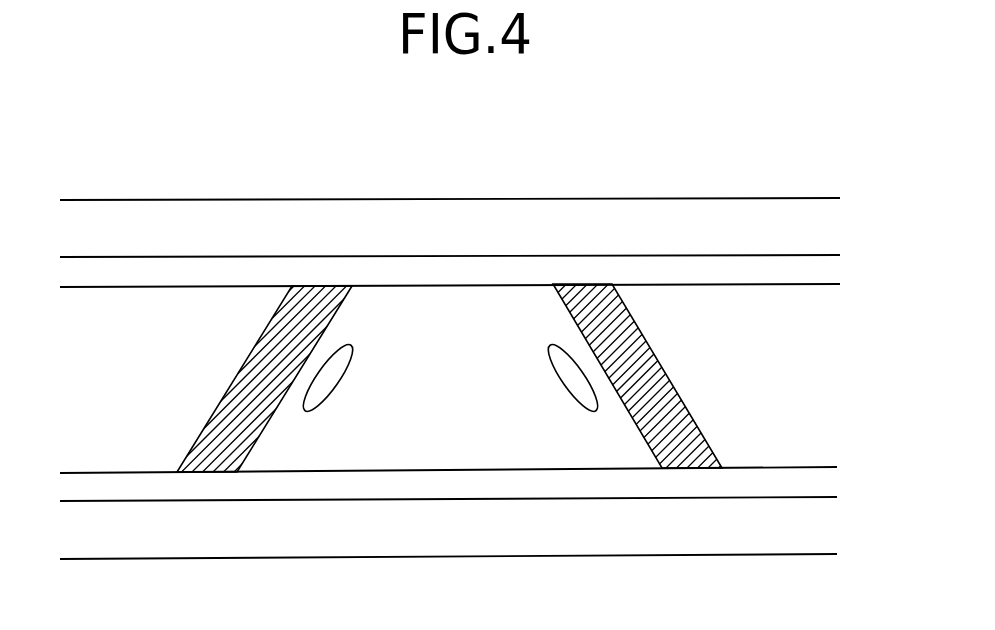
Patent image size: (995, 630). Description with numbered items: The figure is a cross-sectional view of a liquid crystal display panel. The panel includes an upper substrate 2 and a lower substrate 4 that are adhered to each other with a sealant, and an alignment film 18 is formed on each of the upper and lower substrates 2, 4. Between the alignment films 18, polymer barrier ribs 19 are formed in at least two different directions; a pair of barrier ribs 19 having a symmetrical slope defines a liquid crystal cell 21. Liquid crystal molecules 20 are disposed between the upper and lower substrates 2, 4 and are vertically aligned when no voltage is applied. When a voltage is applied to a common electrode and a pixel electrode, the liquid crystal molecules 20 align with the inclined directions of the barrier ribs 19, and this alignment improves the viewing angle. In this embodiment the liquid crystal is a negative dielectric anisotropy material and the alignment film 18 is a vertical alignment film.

The upper substrate 2 is at (832, 225).
The lower substrate 4 is at (830, 529).
The alignment film 18 is at (832, 272).
The barrier rib 19 is at (658, 372).
The liquid crystal molecules 20 is at (560, 382).
The liquid crystal cell 21 is at (436, 312).